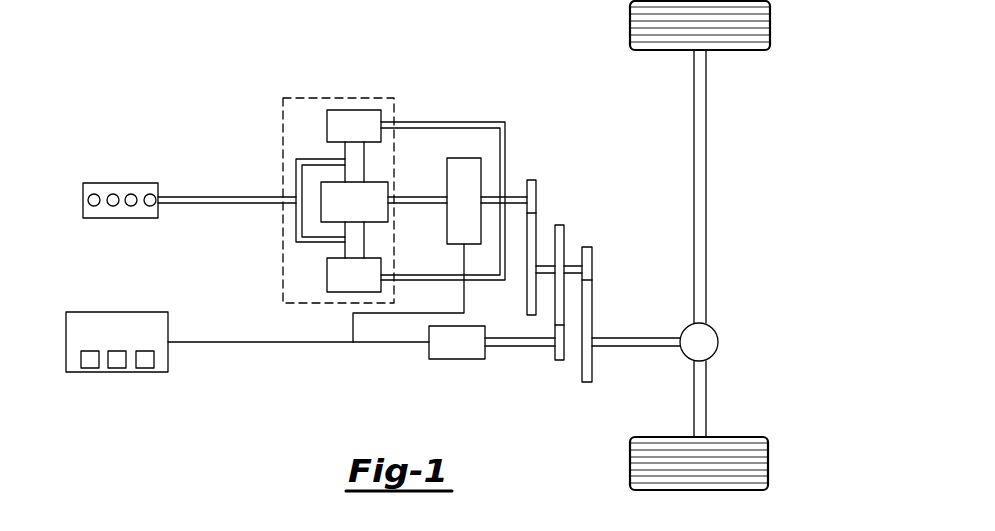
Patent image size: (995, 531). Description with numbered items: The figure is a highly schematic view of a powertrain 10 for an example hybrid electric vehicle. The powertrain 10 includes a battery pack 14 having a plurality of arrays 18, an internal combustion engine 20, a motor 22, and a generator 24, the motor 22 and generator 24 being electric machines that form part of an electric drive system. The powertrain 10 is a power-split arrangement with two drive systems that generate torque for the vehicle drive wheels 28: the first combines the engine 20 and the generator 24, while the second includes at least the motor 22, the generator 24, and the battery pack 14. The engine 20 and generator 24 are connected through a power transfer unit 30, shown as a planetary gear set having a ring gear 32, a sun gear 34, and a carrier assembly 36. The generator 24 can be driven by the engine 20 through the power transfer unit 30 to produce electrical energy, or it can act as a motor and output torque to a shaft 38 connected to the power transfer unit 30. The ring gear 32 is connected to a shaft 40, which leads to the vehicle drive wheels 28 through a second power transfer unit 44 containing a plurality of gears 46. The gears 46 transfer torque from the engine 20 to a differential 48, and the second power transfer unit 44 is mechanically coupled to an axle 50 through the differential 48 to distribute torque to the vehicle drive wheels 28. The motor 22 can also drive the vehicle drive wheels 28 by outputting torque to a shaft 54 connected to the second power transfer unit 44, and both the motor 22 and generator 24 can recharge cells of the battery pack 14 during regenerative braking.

The powertrain 10 is at (153, 27).
The battery pack 14 is at (118, 312).
The arrays 18 is at (90, 368).
The internal combustion engine 20 is at (83, 183).
The motor 22 is at (457, 359).
The generator 24 is at (481, 167).
The vehicle drive wheels 28 is at (630, 28).
The power transfer unit 30 is at (394, 100).
The ring gear 32 is at (327, 126).
The sun gear 34 is at (378, 222).
The carrier assembly 36 is at (296, 182).
The shaft 38 is at (421, 196).
The shaft 40 is at (517, 207).
The second power transfer unit 44 is at (612, 189).
The gears 46 is at (537, 192).
The differential 48 is at (718, 342).
The axle 50 is at (706, 190).
The shaft 54 is at (522, 346).